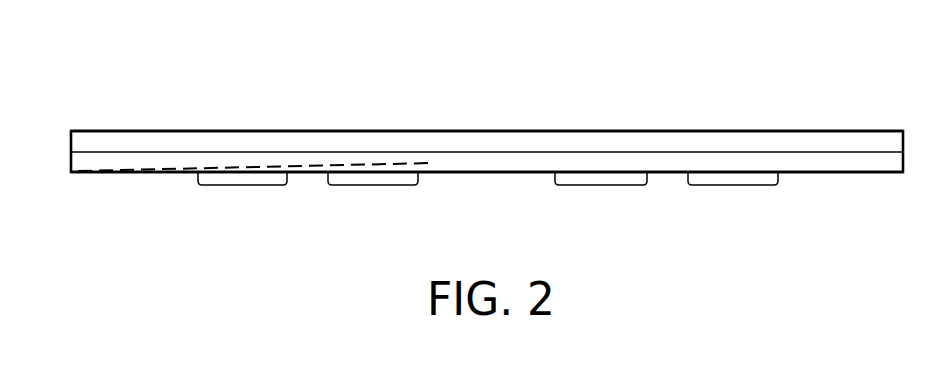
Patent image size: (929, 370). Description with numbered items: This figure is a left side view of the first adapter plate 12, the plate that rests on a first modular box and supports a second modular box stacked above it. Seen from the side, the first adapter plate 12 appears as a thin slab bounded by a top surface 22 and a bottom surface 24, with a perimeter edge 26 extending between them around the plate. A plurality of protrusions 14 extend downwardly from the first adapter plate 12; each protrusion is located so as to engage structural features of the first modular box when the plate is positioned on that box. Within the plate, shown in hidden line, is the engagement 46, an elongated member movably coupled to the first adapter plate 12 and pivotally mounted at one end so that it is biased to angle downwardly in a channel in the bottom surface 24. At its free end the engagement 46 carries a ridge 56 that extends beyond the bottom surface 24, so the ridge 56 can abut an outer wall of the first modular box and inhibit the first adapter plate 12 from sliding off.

The first adapter plate 12 is at (71, 131).
The protrusions 14 is at (353, 185).
The top surface 22 is at (516, 131).
The bottom surface 24 is at (504, 173).
The perimeter edge 26 is at (164, 152).
The engagement 46 is at (378, 164).
The ridge 56 is at (94, 173).